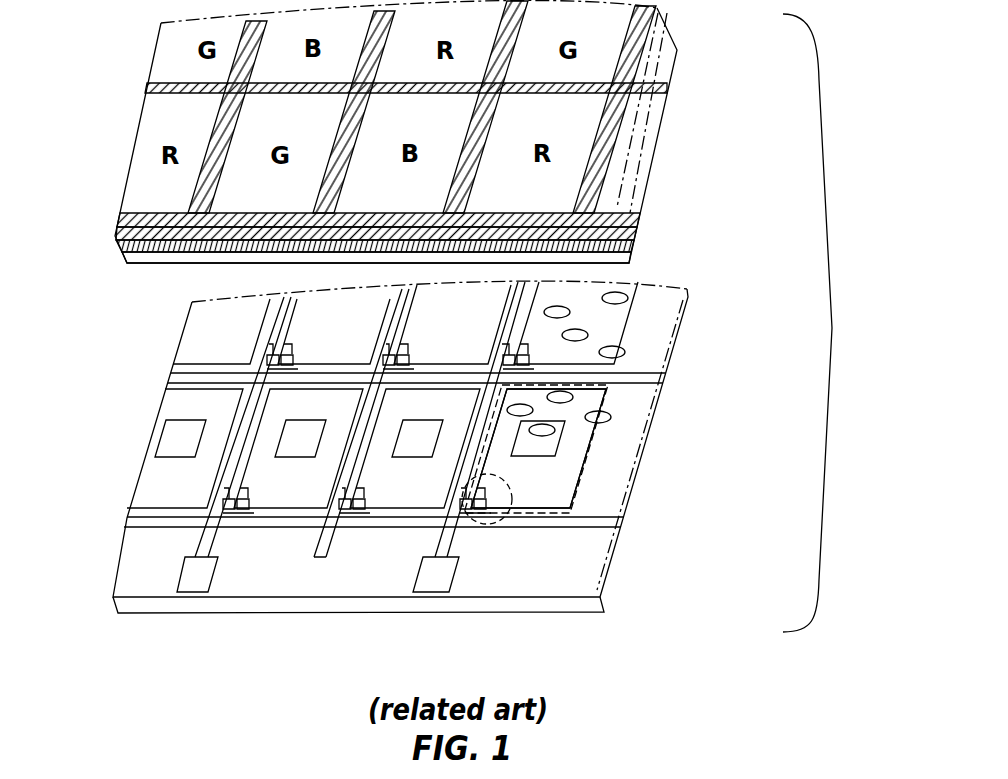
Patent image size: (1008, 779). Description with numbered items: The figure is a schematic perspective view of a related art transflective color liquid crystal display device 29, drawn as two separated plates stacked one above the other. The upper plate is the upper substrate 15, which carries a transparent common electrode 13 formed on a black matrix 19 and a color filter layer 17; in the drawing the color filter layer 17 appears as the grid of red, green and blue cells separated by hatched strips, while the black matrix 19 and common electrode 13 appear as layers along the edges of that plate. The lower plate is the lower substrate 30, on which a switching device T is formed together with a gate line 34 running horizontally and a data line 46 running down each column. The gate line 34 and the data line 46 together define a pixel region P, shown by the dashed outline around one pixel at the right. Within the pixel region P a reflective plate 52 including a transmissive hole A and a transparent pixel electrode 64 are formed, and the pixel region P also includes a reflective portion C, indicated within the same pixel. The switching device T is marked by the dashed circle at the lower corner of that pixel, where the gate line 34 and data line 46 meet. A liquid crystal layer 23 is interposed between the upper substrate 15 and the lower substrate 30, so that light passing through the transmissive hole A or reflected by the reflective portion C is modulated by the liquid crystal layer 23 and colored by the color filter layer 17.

The transparent common electrode 13 is at (630, 230).
The upper substrate 15 is at (117, 226).
The color filter layer 17 is at (597, 157).
The black matrix 19 is at (630, 88).
The liquid crystal layer 23 is at (613, 350).
The transflective LCD device 29 is at (834, 323).
The lower substrate 30 is at (570, 605).
The gate line 34 is at (580, 522).
The data line 46 is at (440, 549).
The reflective plate 52 is at (578, 485).
The transparent pixel electrode 64 is at (684, 522).
The pixel region P is at (606, 403).
The transmissive hole A is at (545, 432).
The reflective portion C is at (573, 460).
The switching device T is at (500, 515).